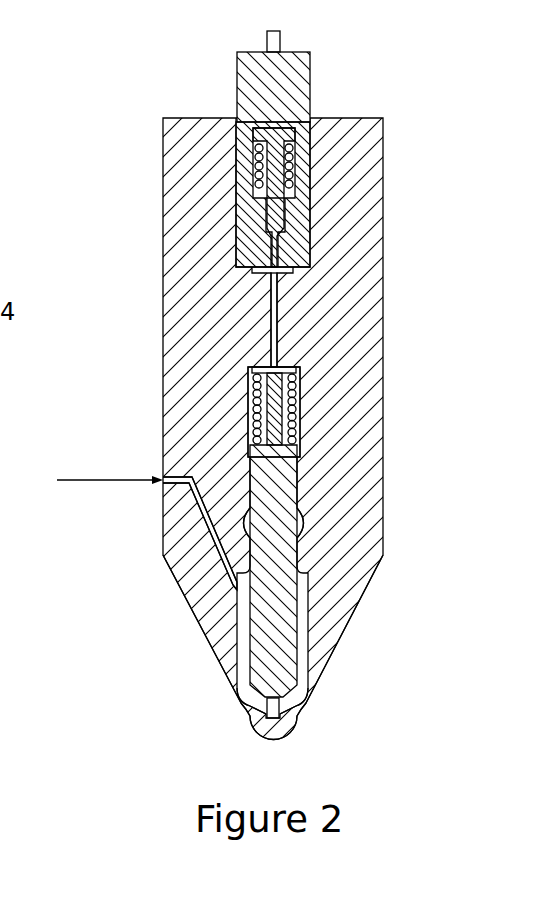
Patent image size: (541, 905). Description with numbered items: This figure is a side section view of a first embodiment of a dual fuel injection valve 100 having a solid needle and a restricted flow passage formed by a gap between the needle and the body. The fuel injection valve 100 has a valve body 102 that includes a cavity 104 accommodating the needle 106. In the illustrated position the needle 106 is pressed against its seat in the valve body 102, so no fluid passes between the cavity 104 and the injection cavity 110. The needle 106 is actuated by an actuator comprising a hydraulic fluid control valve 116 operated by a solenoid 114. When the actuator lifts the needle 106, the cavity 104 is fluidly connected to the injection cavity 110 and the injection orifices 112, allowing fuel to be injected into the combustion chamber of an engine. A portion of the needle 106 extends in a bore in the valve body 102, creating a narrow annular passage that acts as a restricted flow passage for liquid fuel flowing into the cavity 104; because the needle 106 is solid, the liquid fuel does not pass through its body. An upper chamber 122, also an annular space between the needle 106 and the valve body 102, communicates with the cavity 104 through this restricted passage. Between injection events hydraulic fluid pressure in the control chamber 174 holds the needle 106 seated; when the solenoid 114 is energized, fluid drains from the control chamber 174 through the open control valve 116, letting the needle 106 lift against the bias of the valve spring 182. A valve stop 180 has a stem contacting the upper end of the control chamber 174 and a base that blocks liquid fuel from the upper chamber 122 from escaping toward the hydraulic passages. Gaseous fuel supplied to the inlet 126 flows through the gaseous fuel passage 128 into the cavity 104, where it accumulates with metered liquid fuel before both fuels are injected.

The fuel injection valve 100 is at (117, 65).
The valve body 102 is at (355, 190).
The cavity 104 is at (303, 658).
The needle 106 is at (277, 622).
The injection cavity 110 is at (275, 715).
The injection orifices 112 is at (250, 712).
The solenoid 114 is at (283, 90).
The hydraulic fluid control valve 116 is at (307, 148).
The upper chamber 122 is at (300, 521).
The inlet 126 is at (163, 485).
The gaseous fuel passage 128 is at (222, 540).
The control chamber 174 is at (300, 396).
The valve stop 180 is at (300, 420).
The valve spring 182 is at (300, 365).